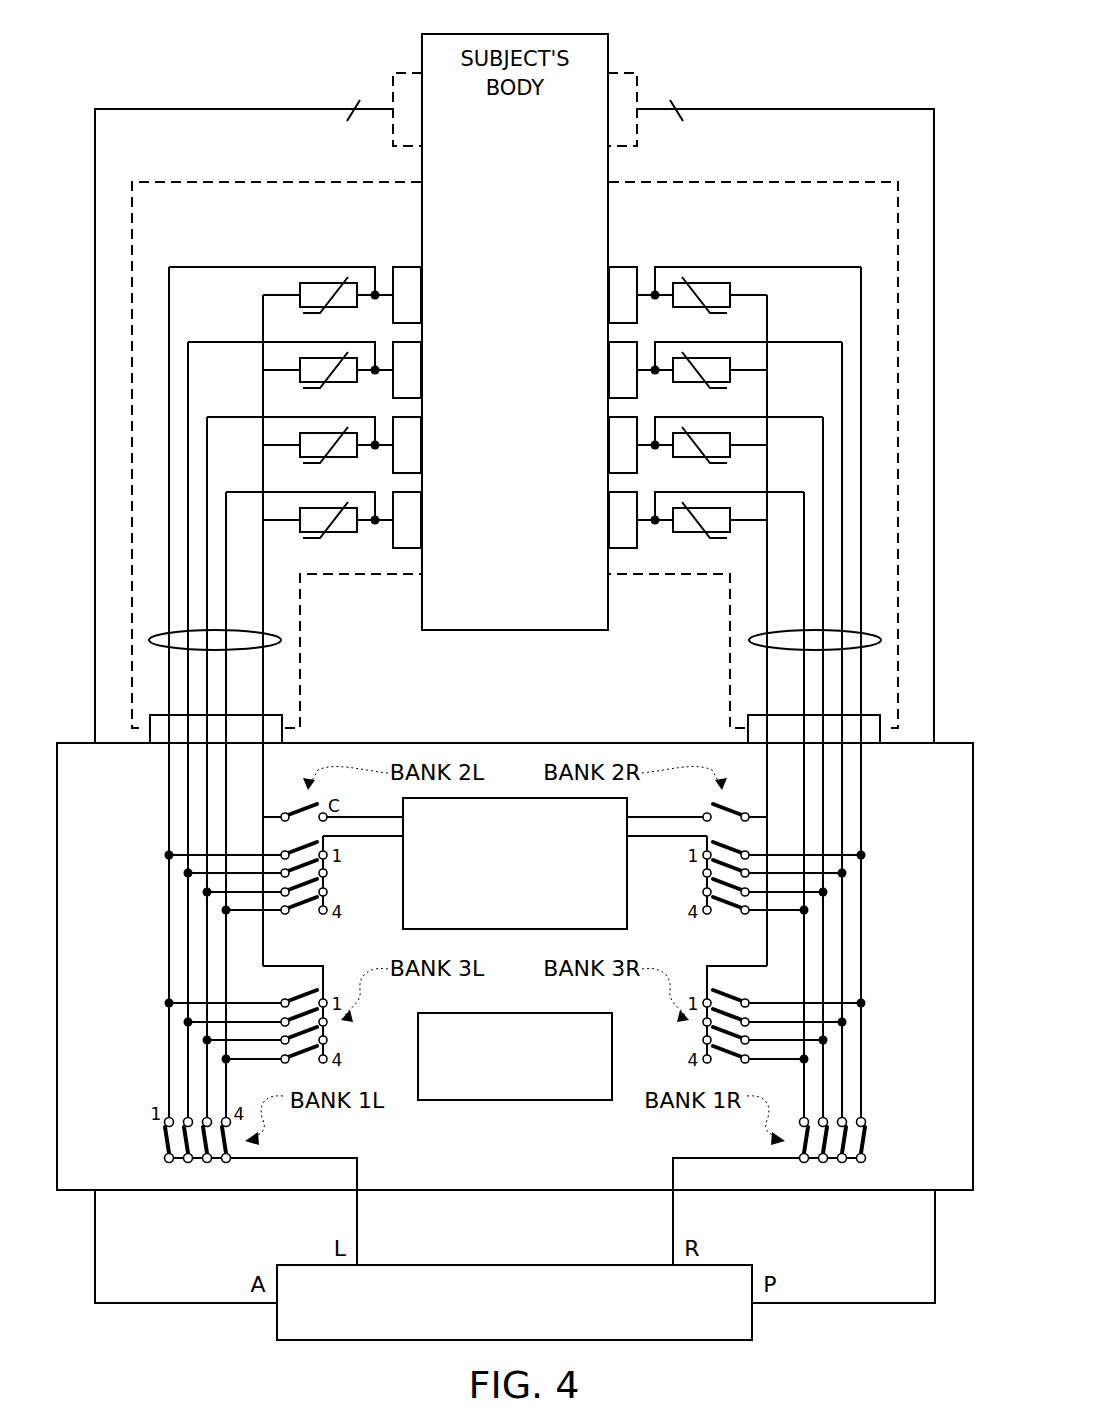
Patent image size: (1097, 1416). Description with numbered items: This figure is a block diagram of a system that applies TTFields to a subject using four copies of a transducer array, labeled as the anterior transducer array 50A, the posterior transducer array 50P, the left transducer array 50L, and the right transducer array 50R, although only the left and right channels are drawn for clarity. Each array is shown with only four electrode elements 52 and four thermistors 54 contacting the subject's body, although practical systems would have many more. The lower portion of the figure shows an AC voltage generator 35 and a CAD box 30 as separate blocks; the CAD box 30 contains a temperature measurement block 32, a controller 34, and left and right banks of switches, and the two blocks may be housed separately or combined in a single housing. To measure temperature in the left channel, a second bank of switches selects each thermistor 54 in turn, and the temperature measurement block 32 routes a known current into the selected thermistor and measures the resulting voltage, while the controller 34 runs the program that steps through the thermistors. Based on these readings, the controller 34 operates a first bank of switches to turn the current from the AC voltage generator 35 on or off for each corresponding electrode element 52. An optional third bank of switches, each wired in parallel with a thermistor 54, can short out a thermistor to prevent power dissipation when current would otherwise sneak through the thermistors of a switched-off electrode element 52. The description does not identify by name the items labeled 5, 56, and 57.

The electrode lead 5 is at (514, 406).
The CAD box 30 is at (527, 743).
The temperature measurement block 32 is at (515, 863).
The controller 34 is at (515, 1056).
The AC voltage generator 35 is at (513, 1265).
The anterior transducer array 50A is at (408, 72).
The posterior transducer array 50P is at (622, 72).
The left transducer array 50L is at (265, 182).
The right transducer array 50R is at (765, 182).
The electrode element 52 is at (403, 233).
The thermistor 54 is at (315, 233).
The cable 56 is at (281, 640).
The connector 57 is at (285, 715).